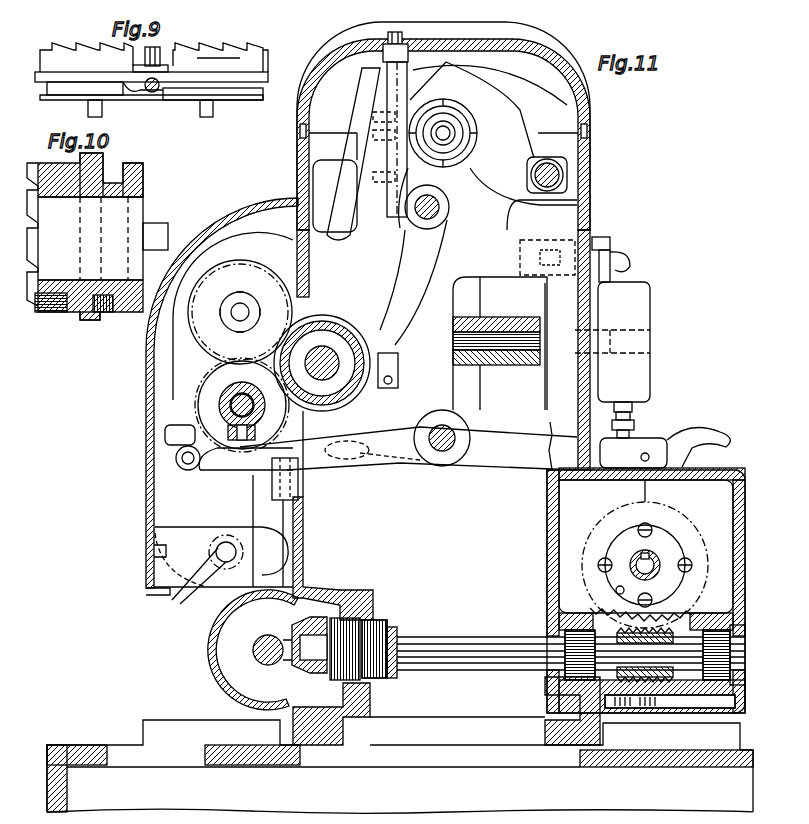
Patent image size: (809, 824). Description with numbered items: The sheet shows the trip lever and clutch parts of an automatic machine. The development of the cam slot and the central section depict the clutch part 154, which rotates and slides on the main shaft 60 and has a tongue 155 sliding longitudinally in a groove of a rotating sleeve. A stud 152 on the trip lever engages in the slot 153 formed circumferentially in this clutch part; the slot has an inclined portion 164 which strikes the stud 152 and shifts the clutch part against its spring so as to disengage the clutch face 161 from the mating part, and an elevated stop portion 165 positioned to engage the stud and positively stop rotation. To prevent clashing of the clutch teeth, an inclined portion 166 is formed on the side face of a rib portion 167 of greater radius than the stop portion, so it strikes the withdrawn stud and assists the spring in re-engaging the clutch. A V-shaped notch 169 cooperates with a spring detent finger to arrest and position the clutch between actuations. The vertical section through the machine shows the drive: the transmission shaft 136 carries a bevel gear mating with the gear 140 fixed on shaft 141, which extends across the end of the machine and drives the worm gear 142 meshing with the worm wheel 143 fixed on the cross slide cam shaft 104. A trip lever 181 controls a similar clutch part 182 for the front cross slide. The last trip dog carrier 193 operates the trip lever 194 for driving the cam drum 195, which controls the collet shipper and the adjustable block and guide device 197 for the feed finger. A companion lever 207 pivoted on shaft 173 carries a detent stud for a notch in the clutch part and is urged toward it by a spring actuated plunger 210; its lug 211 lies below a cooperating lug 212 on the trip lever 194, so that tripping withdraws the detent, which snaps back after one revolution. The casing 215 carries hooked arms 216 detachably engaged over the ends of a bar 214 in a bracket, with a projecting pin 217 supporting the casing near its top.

In FIG. 11, the shaft 60 is at (216, 405).
In FIG. 11, the cross slide cam shaft 104 is at (652, 565).
In FIG. 11, the transmission shaft 136 is at (268, 634).
In FIG. 11, the bevel gear 140 is at (296, 680).
In FIG. 11, the shaft 141 is at (504, 668).
In FIG. 11, the worm gear 142 is at (664, 608).
In FIG. 11, the worm wheel 143 is at (722, 596).
In FIG. 9, the stud 152 is at (160, 86).
In FIG. 9, the slot 153 is at (264, 93).
In FIG. 10, the slot 153 is at (106, 314).
In FIG. 9, the clutch part 154 is at (268, 66).
In FIG. 10, the clutch part 154 is at (56, 166).
In FIG. 9, the tongue 155 is at (214, 112).
In FIG. 10, the tongue 155 is at (156, 224).
In FIG. 9, the clutch face 161 is at (238, 48).
In FIG. 10, the clutch face 161 is at (46, 226).
In FIG. 9, the inclined portion 164 is at (170, 100).
In FIG. 9, the stop portion 165 is at (136, 100).
In FIG. 9, the inclined portion 166 is at (128, 80).
In FIG. 10, the inclined portion 166 is at (94, 321).
In FIG. 9, the rib portion 167 is at (62, 78).
In FIG. 10, the rib portion 167 is at (102, 156).
In FIG. 9, the V-shaped notch 169 is at (160, 52).
In FIG. 10, the V-shaped notch 169 is at (44, 303).
In FIG. 11, the shaft 173 is at (447, 452).
In FIG. 11, the trip lever 181 is at (310, 476).
In FIG. 11, the clutch part 182 is at (212, 382).
In FIG. 11, the trip dog carrier 193 is at (216, 455).
In FIG. 11, the trip lever 194 is at (514, 441).
In FIG. 11, the cam drum 195 is at (354, 402).
In FIG. 11, the adjustable block and guide device 197 is at (390, 100).
In FIG. 11, the companion lever 207 is at (194, 470).
In FIG. 11, the spring actuated plunger 210 is at (283, 500).
In FIG. 11, the lug 211 is at (363, 457).
In FIG. 11, the lug 212 is at (350, 451).
In FIG. 11, the bar 214 is at (220, 566).
In FIG. 11, the casing 215 is at (147, 488).
In FIG. 11, the hooked arms 216 is at (188, 536).
In FIG. 11, the projecting pin 217 is at (297, 197).